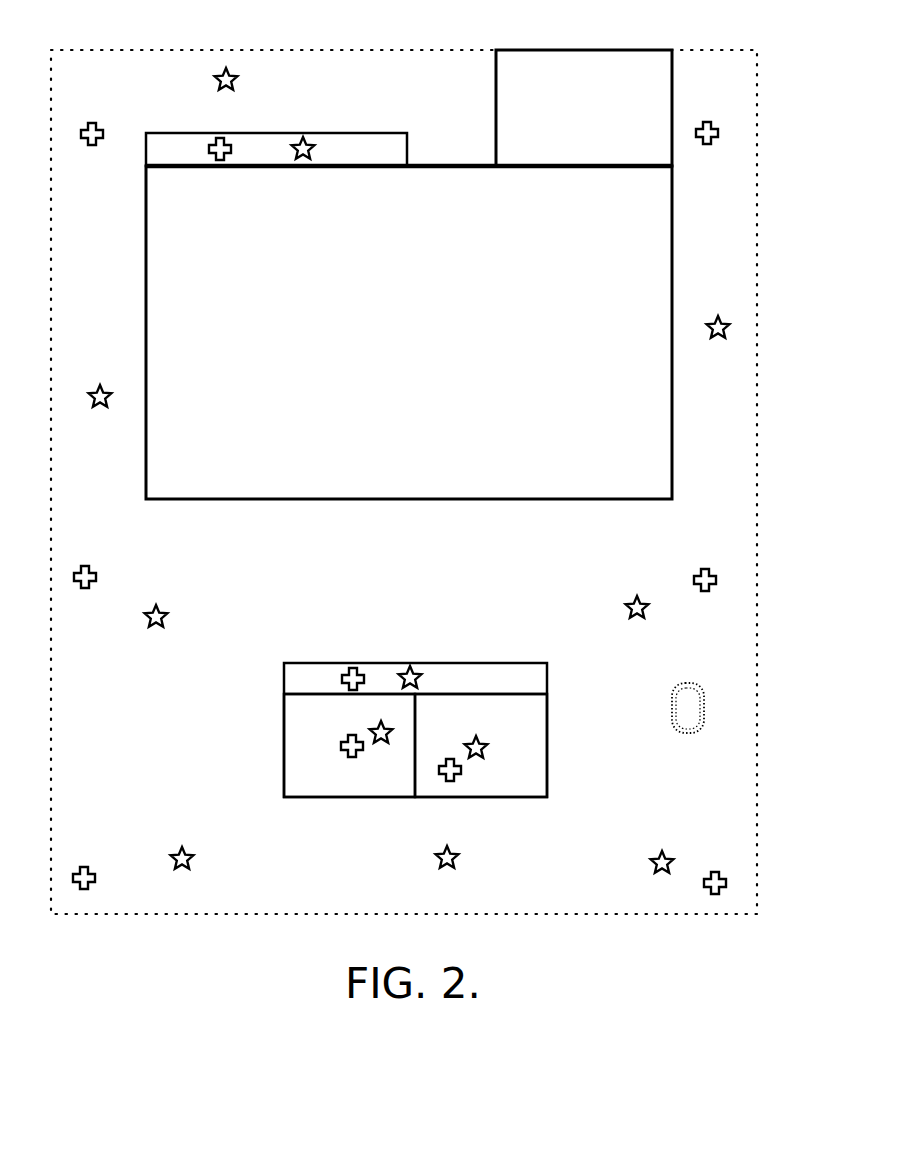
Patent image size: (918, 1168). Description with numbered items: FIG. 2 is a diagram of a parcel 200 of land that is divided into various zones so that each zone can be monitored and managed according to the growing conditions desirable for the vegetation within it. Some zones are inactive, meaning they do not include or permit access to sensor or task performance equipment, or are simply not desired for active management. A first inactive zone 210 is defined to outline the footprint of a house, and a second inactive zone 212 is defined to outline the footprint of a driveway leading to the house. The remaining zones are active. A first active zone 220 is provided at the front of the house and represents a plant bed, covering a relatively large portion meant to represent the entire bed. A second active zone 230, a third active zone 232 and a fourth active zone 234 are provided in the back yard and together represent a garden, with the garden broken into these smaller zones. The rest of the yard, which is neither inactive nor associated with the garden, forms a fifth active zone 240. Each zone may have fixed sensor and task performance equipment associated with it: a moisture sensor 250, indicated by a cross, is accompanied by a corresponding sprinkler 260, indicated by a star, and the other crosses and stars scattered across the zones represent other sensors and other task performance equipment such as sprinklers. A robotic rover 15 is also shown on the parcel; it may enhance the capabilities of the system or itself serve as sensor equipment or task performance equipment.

The parcel 200 is at (421, 49).
The first inactive zone 210 is at (640, 295).
The second inactive zone 212 is at (602, 80).
The first active zone 220 is at (256, 146).
The second active zone 230 is at (434, 663).
The third active zone 232 is at (284, 748).
The fourth active zone 234 is at (547, 762).
The fifth active zone 240 is at (650, 558).
The moisture sensor 250 is at (349, 668).
The sprinkler 260 is at (406, 667).
The robotic rover 15 is at (700, 702).